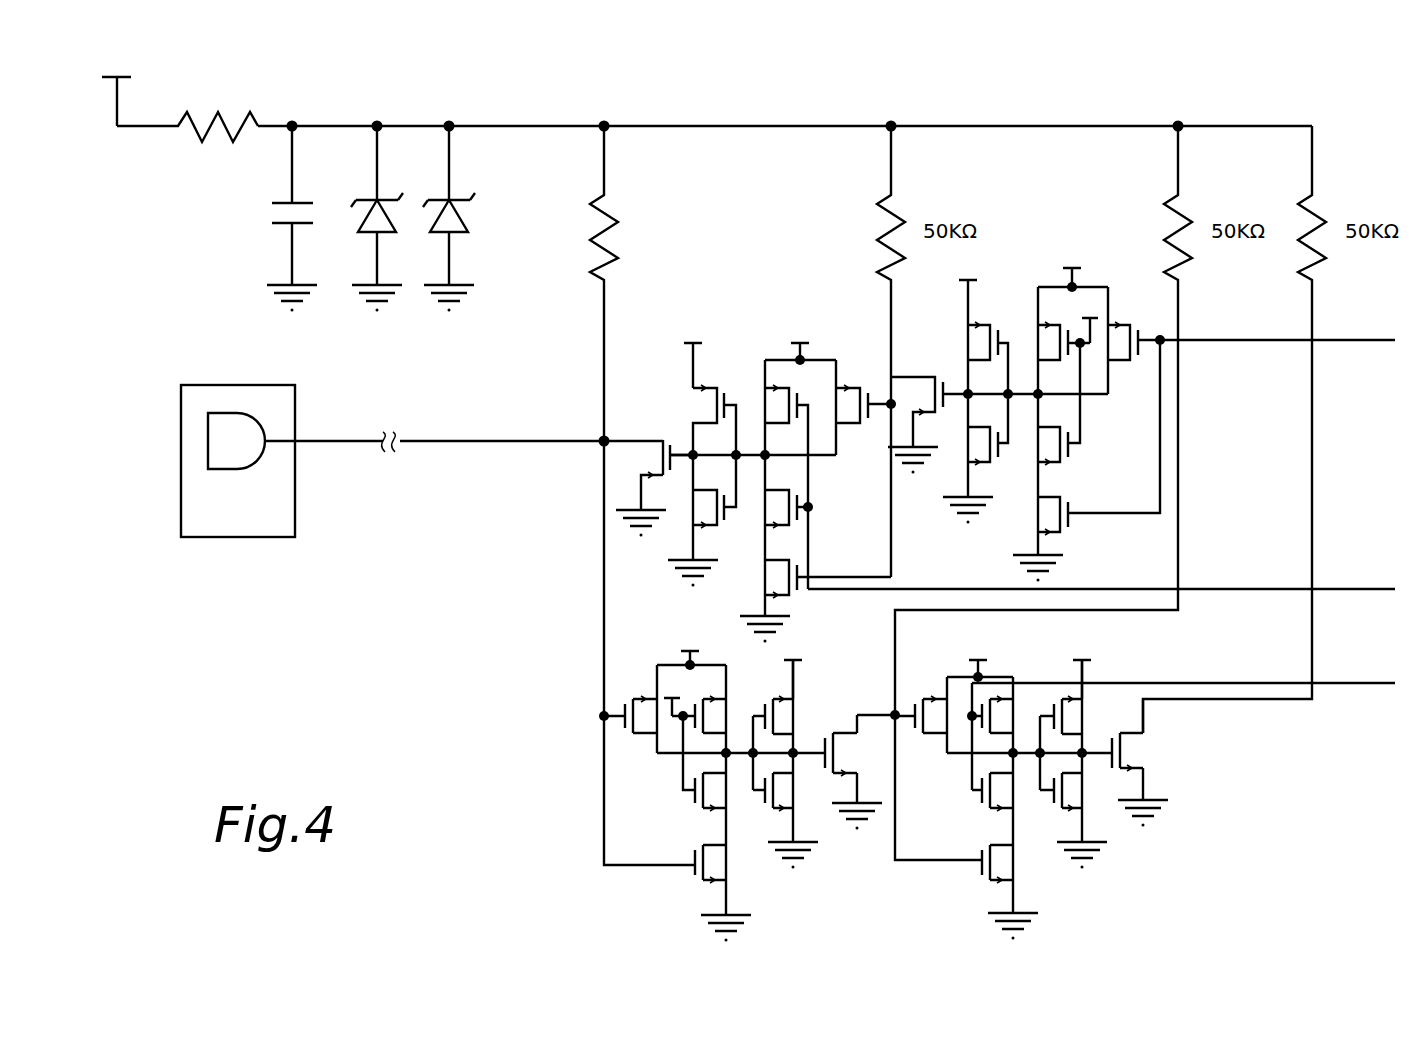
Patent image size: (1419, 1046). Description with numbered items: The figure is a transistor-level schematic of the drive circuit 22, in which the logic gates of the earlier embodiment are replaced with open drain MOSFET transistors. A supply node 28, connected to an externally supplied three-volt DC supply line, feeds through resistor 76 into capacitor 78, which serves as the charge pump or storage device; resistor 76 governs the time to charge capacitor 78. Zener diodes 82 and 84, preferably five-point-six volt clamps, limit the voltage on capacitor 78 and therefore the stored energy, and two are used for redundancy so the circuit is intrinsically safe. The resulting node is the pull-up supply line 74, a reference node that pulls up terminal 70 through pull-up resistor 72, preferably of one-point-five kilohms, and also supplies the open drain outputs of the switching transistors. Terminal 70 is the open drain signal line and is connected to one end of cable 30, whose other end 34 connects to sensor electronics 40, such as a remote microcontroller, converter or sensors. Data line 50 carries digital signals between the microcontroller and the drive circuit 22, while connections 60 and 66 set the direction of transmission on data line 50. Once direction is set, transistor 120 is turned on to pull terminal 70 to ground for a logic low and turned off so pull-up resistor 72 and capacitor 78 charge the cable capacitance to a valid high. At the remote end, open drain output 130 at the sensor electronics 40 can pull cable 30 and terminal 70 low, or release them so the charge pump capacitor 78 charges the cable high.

The drive circuit 22 is at (980, 105).
The supply node 28 is at (125, 77).
The cable 30 is at (447, 441).
The end of cable 34 is at (322, 441).
The sensor electronics 40 is at (240, 537).
The data line 50 is at (1340, 340).
The connection 60 is at (1360, 589).
The connection 66 is at (1365, 683).
The terminal 70 is at (605, 441).
The pull-up resistor 72 is at (592, 268).
The pull-up supply line 74 is at (520, 125).
The resistor 76 is at (220, 117).
The capacitor 78 is at (278, 223).
The zener diode 82 is at (360, 232).
The zener diode 84 is at (432, 232).
The transistor 120 is at (662, 435).
The open drain output 130 is at (228, 470).